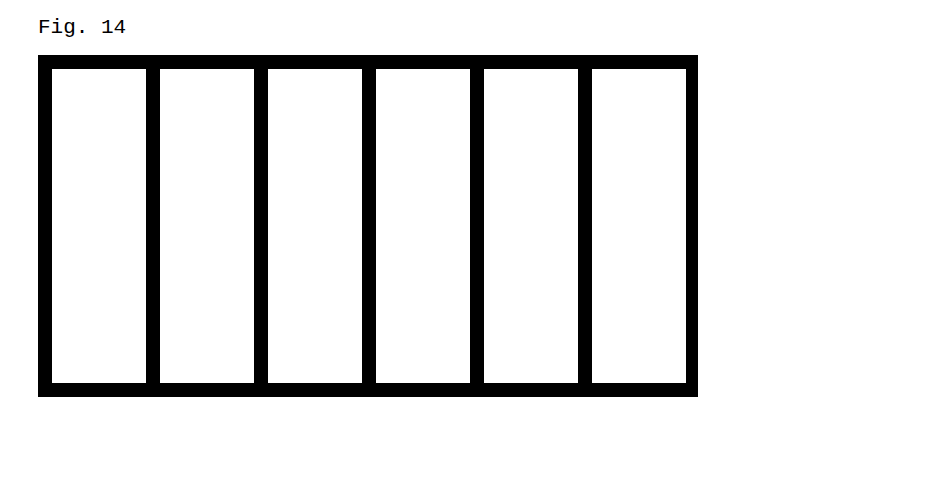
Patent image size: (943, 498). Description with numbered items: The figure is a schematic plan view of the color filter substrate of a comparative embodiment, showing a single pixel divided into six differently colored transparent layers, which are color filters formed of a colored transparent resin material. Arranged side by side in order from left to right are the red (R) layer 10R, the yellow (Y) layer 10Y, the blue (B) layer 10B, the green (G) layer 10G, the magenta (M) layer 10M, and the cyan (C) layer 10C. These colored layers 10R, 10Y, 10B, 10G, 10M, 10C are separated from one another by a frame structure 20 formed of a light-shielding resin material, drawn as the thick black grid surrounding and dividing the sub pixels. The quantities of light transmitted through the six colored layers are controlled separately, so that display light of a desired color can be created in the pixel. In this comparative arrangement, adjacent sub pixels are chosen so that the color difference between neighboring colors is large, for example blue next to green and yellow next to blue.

The frame structure 20 is at (698, 355).
The red (R) layer 10R is at (98, 367).
The yellow (Y) layer 10Y is at (206, 367).
The blue (B) layer 10B is at (314, 367).
The green (G) layer 10G is at (422, 367).
The magenta (M) layer 10M is at (530, 367).
The cyan (C) layer 10C is at (638, 367).